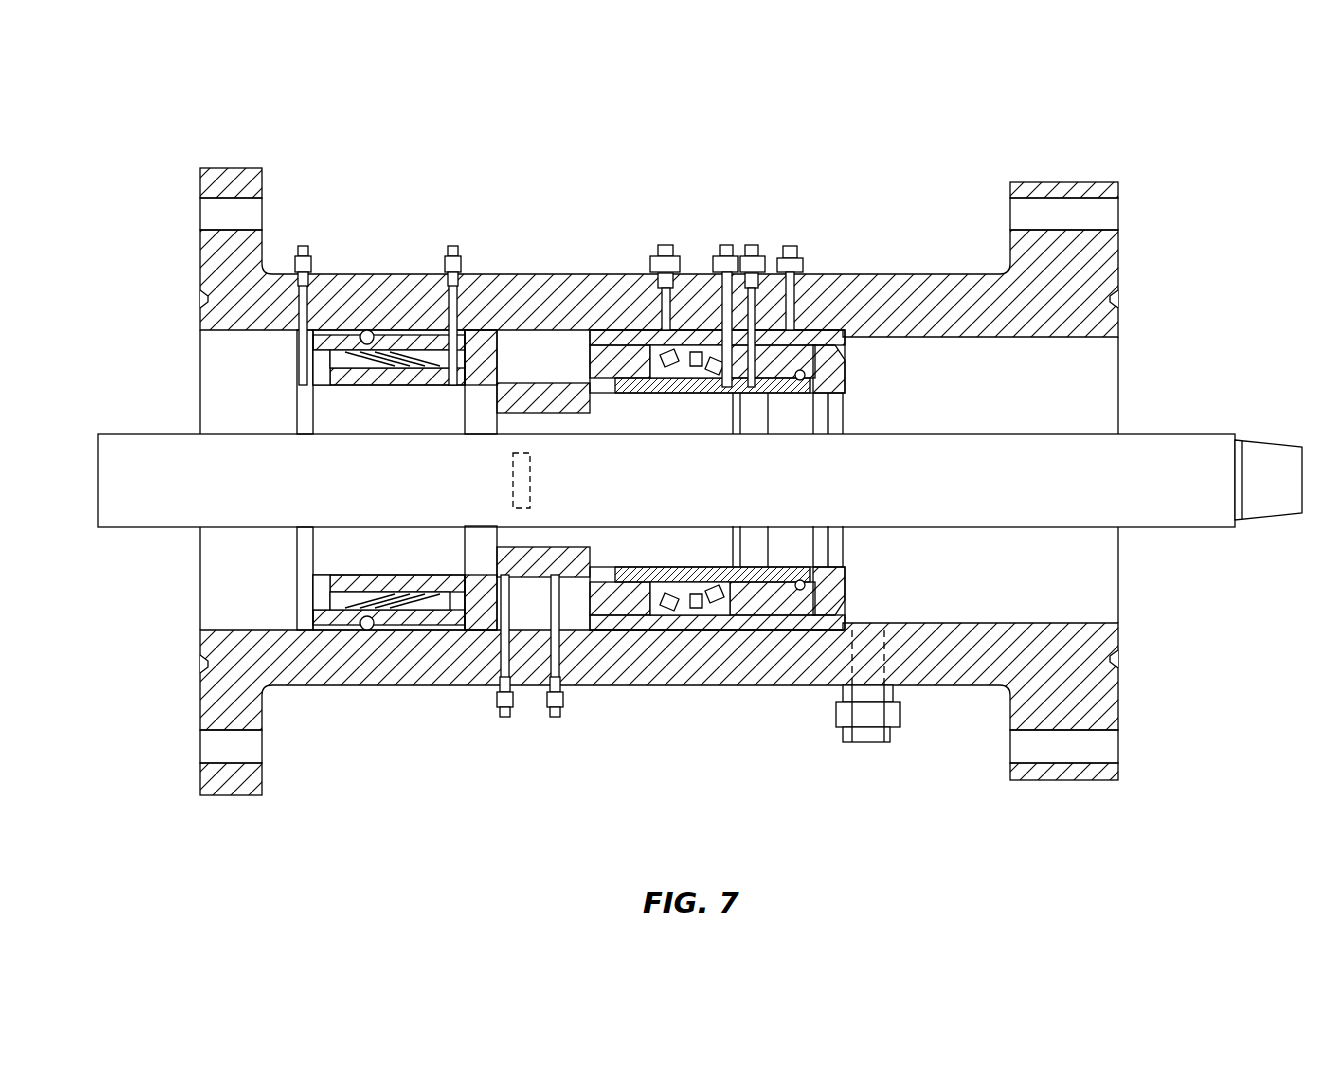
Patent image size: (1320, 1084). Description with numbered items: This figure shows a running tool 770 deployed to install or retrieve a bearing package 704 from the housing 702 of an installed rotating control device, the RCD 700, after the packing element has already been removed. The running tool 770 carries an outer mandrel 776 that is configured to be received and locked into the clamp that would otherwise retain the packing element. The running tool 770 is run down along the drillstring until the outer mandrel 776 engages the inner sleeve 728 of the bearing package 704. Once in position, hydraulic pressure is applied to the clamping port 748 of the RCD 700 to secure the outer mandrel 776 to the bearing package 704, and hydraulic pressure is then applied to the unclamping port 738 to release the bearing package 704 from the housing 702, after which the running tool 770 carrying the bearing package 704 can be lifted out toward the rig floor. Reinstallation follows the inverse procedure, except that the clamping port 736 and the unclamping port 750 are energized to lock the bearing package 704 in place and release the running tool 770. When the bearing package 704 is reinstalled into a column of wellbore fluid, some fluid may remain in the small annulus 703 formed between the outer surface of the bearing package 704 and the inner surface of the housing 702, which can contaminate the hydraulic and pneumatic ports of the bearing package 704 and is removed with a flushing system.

The rotating control device 700 is at (700, 436).
The housing 702 is at (835, 295).
The annulus 703 is at (553, 330).
The bearing package 704 is at (693, 618).
The inner sleeve 728 is at (595, 568).
The clamping port 736 is at (304, 246).
The unclamping port 738 is at (455, 246).
The clamping port 748 is at (502, 720).
The unclamping port 750 is at (556, 720).
The running tool 770 is at (1155, 515).
The outer mandrel 776 is at (580, 395).